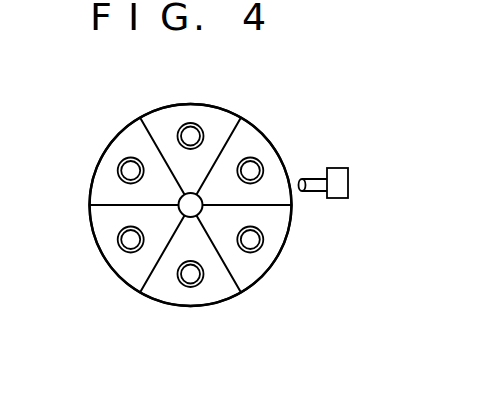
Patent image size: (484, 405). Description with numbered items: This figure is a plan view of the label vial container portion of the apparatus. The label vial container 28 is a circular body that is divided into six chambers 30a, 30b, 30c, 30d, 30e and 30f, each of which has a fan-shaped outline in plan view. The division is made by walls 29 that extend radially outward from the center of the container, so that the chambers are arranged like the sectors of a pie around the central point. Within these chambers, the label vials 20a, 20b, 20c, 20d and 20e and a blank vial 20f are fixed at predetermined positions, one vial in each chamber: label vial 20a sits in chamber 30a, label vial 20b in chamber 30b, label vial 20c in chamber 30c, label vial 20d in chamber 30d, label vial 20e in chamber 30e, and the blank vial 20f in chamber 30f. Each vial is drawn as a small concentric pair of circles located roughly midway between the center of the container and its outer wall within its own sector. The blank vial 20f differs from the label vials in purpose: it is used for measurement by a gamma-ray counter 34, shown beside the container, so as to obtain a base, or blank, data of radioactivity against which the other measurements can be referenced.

The label vial container 28 is at (279, 266).
The walls 29 is at (234, 134).
The chamber 30a is at (152, 300).
The chamber 30b is at (252, 278).
The chamber 30c is at (285, 192).
The chamber 30d is at (217, 122).
The chamber 30e is at (130, 138).
The chamber 30f is at (127, 268).
The label vial 20a is at (188, 289).
The label vial 20b is at (263, 237).
The label vial 20c is at (263, 168).
The label vial 20d is at (185, 124).
The label vial 20e is at (118, 172).
The blank vial 20f is at (118, 240).
The gamma-ray counter 34 is at (348, 183).